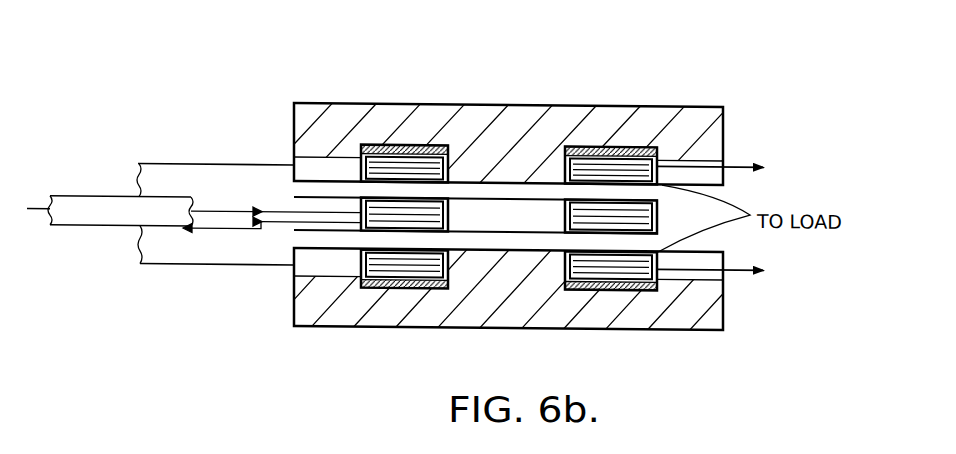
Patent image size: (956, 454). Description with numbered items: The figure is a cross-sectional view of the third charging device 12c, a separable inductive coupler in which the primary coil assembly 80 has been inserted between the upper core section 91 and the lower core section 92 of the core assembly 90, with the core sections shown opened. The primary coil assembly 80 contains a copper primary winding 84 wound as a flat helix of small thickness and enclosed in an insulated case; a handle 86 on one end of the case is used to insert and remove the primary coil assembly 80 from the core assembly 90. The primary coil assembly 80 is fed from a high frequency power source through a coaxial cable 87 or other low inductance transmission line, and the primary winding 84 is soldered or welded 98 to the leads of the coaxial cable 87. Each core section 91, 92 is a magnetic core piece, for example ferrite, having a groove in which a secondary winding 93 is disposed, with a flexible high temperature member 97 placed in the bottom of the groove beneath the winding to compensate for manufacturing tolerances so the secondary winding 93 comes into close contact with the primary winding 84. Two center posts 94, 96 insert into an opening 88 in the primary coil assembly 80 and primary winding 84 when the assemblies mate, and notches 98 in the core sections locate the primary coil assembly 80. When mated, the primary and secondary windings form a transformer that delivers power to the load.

The third charging device 12c is at (165, 61).
The primary coil assembly 80 is at (175, 128).
The primary winding 84 is at (704, 219).
The handle 86 is at (220, 266).
The coaxial cable 87 is at (100, 204).
The opening 88 is at (557, 223).
The core assembly 90 is at (752, 138).
The upper core section 91 is at (702, 121).
The lower core section 92 is at (705, 314).
The secondary winding 93 is at (433, 246).
The center post 94 is at (500, 251).
The center post 96 is at (524, 176).
The flexible high temperature member 97 is at (382, 145).
The notches 98 is at (255, 197).